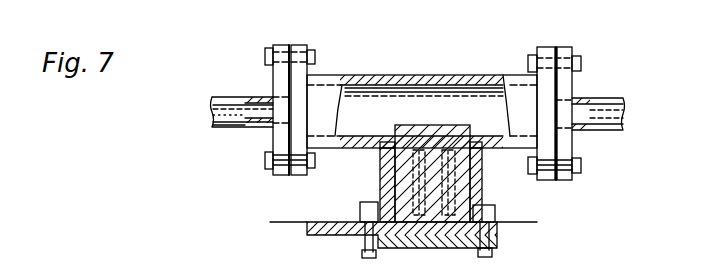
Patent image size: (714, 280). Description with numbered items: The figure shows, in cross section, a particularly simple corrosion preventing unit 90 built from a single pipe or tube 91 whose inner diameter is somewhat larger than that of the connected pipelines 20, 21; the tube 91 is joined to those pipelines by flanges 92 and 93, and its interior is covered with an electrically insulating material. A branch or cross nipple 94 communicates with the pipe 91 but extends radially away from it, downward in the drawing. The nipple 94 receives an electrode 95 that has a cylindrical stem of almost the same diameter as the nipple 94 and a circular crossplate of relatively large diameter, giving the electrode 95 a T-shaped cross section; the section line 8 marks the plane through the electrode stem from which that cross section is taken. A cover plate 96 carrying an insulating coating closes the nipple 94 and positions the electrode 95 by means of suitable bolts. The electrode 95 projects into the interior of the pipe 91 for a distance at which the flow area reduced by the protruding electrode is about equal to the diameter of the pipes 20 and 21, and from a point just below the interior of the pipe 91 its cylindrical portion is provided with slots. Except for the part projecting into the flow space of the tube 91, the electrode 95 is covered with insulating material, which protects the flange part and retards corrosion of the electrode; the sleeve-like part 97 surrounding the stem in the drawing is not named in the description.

The section line 8- 8 is at (279, 221).
The pipe 20 is at (233, 97).
The pipeline 21 is at (619, 91).
The corrosion preventing unit 90 is at (469, 47).
The pipe or tube 91 is at (412, 76).
The flange 92 is at (296, 46).
The flange 93 is at (548, 178).
The branch or cross nipple 94 is at (385, 152).
The electrode 95 is at (442, 136).
The cover plate 96 is at (433, 245).
The sleeve 97 is at (393, 172).